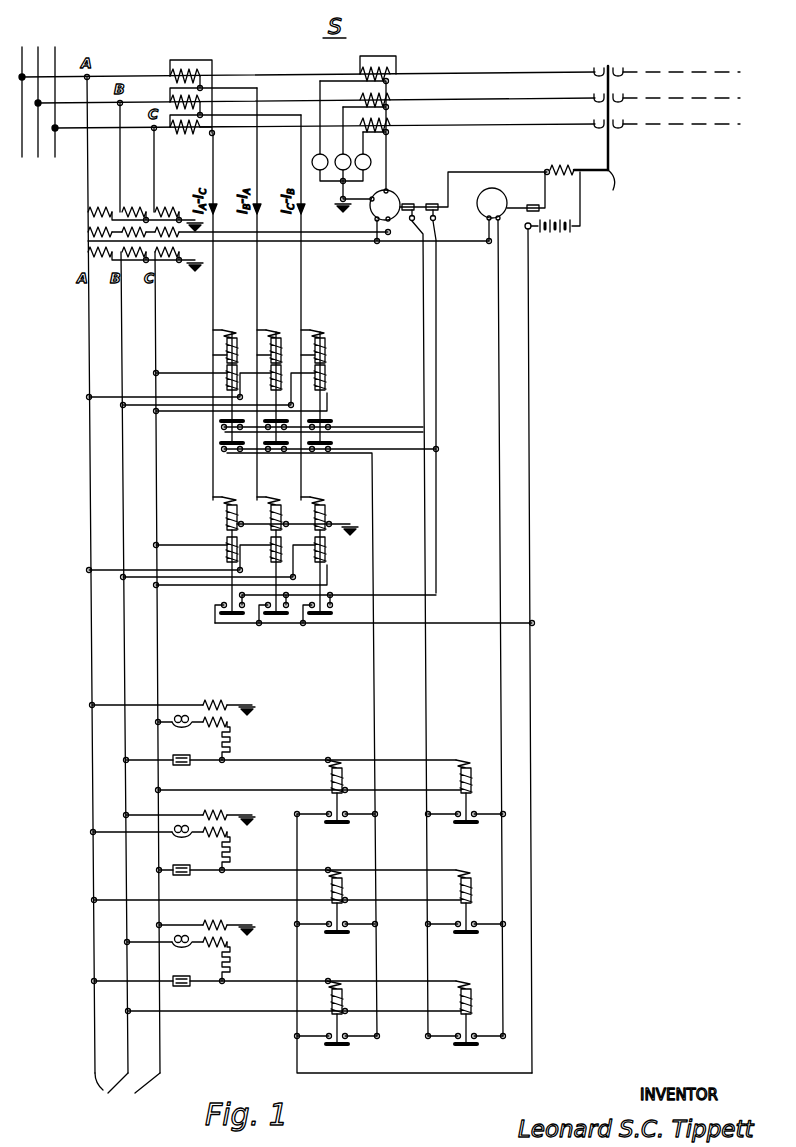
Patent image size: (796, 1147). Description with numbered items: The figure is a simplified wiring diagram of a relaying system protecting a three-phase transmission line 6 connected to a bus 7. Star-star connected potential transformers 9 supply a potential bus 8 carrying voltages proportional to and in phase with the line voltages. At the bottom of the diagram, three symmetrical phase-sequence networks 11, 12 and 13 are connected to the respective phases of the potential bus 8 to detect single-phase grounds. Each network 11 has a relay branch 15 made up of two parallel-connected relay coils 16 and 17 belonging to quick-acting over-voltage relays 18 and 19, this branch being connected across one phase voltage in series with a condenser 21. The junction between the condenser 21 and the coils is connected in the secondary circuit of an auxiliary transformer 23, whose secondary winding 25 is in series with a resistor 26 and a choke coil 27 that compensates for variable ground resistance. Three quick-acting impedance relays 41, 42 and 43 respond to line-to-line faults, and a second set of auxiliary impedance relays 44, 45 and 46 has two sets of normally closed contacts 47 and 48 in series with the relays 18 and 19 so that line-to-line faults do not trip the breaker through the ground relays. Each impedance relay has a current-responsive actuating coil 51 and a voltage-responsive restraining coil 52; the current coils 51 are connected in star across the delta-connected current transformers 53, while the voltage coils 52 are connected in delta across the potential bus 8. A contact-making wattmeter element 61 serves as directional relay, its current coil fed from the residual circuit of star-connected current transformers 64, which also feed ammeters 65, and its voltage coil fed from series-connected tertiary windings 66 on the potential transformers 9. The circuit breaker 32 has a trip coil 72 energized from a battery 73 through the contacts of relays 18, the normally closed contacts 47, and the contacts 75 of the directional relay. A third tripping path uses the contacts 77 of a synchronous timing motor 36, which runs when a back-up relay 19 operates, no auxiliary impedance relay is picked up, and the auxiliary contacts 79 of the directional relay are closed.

The three-phase transmission line 6 is at (742, 124).
The bus 7 is at (55, 47).
The potential bus 8 is at (155, 326).
The potential transformers 9 is at (88, 252).
The network 11 is at (296, 743).
The network 12 is at (277, 863).
The network 13 is at (275, 976).
The relay branch 15 is at (297, 790).
The relay coil 16 is at (340, 767).
The relay coil 17 is at (472, 766).
The over-voltage relay 18 is at (366, 810).
The over-voltage relay 19 is at (497, 810).
The condenser 21 is at (190, 763).
The auxiliary transformer 23 is at (218, 704).
The secondary winding 25 is at (230, 720).
The resistor 26 is at (232, 740).
The choke coil 27 is at (186, 726).
The circuit breaker 32 is at (620, 135).
The synchronous motor 36 is at (507, 196).
The impedance relay 41 is at (243, 495).
The impedance relay 42 is at (287, 495).
The impedance relay 43 is at (331, 495).
The auxiliary impedance relay 44 is at (243, 316).
The auxiliary impedance relay 45 is at (287, 316).
The auxiliary impedance relay 46 is at (331, 316).
The normally closed contacts 47 is at (227, 453).
The normally closed contacts 48 is at (222, 426).
The current-responsive actuating coil 51 is at (224, 340).
The voltage-responsive restraining coil 52 is at (225, 385).
The delta-connected current transformers 53 is at (188, 62).
The contact-making wattmeter element 61 is at (393, 197).
The star-connected current transformers 64 is at (378, 58).
The ammeters 65 is at (328, 156).
The tertiary winding 66 is at (88, 232).
The trip coil 72 is at (556, 166).
The battery 73 is at (571, 232).
The contacts 75 is at (438, 218).
The contacts 77 is at (525, 229).
The auxiliary contacts 79 is at (411, 224).